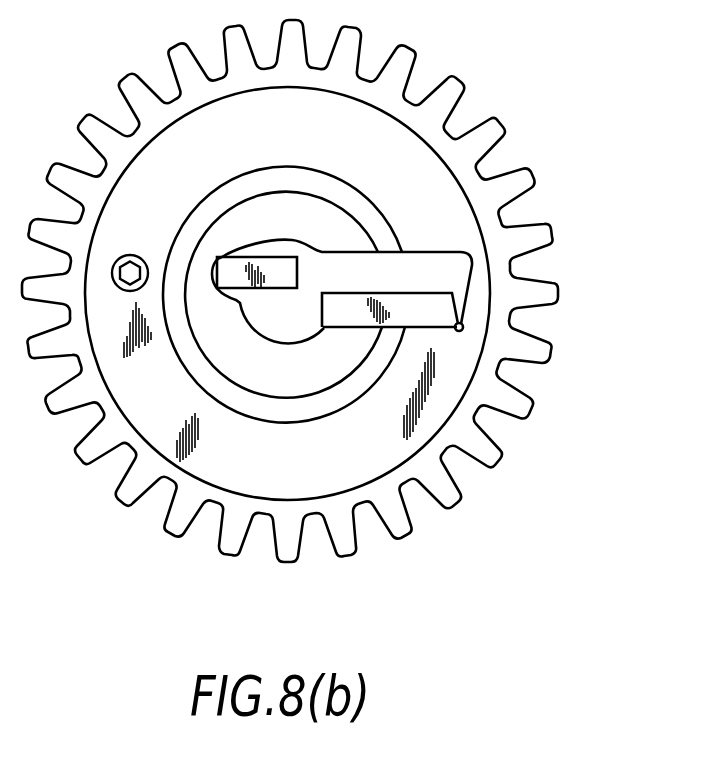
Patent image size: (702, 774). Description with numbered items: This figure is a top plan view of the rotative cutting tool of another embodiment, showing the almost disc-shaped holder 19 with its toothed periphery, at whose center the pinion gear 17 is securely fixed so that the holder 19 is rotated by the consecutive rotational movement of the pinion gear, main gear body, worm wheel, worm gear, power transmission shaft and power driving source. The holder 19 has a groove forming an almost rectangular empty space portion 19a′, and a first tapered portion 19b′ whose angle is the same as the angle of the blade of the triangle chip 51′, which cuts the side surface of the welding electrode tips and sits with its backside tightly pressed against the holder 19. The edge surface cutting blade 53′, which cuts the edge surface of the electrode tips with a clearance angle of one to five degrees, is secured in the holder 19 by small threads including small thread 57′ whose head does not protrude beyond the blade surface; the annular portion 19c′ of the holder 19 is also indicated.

The pinion gear 17 is at (528, 347).
The holder 19 is at (560, 117).
The empty space portion 19a′ is at (293, 320).
The first tapered portion 19b′ is at (297, 210).
The annular ring of locking member 19c′ is at (362, 205).
The triangle chip 51′ is at (272, 280).
The edge surface cutting blade 53′ is at (357, 317).
The small thread 57′ is at (130, 266).